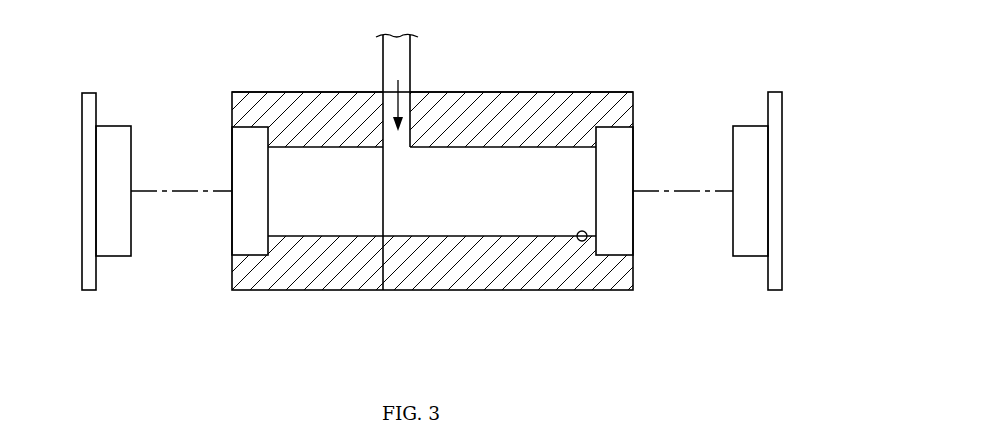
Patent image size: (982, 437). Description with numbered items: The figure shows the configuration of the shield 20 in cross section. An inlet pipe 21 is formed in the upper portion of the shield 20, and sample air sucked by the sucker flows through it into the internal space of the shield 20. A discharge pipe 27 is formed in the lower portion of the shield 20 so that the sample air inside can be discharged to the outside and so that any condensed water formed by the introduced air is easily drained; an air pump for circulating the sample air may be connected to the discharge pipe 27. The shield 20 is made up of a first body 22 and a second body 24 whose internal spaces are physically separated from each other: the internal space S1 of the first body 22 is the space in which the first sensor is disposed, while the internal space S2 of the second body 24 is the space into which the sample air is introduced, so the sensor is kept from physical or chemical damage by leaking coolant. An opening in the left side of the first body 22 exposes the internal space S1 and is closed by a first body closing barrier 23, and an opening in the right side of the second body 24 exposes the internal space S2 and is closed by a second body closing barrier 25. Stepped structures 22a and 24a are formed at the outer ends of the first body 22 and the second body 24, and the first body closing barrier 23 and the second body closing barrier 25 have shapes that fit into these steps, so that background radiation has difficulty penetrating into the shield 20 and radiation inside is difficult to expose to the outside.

The shield 20 is at (816, 106).
The inlet pipe 21 is at (411, 63).
The first body 22 is at (301, 100).
The stepped structure 22a is at (250, 128).
The first body closing barrier 23 is at (95, 215).
The second body 24 is at (523, 100).
The stepped structure 24a is at (613, 128).
The second body closing barrier 25 is at (768, 215).
The discharge pipe 27 is at (583, 241).
The internal space of the first body S1 is at (335, 199).
The internal space of the second body S2 is at (527, 199).